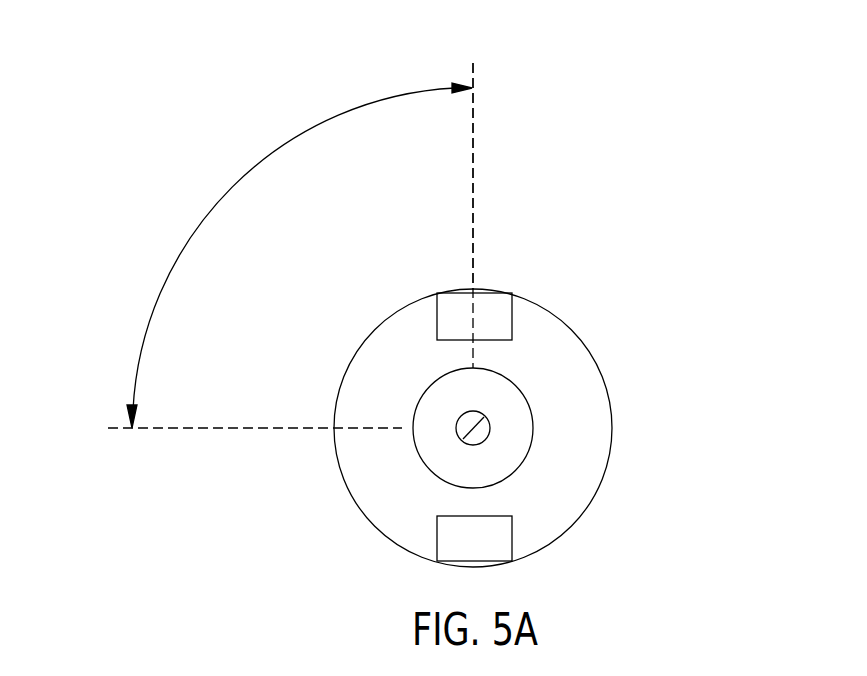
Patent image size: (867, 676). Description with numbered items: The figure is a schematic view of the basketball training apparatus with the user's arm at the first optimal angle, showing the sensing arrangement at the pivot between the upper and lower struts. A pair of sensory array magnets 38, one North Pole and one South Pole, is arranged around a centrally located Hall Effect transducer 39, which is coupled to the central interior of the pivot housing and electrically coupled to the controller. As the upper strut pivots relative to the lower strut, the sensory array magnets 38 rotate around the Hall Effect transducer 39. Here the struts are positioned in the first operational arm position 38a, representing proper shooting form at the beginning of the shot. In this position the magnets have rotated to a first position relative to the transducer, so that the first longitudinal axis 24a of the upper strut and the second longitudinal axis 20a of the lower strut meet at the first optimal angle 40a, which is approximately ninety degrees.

The sensory array magnets 38 is at (512, 317).
The first operational arm position 38a is at (475, 147).
The Hall Effect transducer 39 is at (437, 380).
The second longitudinal axis 20a is at (475, 212).
The first longitudinal axis 24a is at (205, 428).
The first optimal angle 40a is at (176, 268).